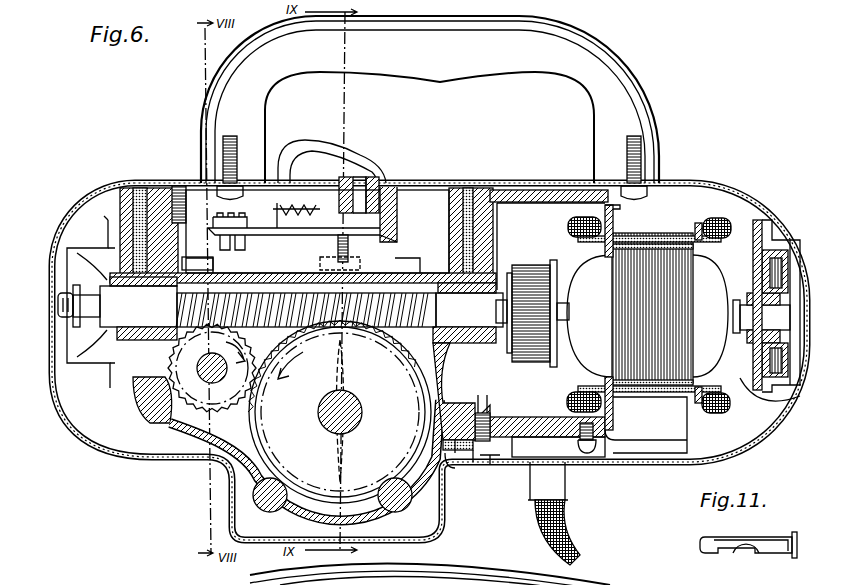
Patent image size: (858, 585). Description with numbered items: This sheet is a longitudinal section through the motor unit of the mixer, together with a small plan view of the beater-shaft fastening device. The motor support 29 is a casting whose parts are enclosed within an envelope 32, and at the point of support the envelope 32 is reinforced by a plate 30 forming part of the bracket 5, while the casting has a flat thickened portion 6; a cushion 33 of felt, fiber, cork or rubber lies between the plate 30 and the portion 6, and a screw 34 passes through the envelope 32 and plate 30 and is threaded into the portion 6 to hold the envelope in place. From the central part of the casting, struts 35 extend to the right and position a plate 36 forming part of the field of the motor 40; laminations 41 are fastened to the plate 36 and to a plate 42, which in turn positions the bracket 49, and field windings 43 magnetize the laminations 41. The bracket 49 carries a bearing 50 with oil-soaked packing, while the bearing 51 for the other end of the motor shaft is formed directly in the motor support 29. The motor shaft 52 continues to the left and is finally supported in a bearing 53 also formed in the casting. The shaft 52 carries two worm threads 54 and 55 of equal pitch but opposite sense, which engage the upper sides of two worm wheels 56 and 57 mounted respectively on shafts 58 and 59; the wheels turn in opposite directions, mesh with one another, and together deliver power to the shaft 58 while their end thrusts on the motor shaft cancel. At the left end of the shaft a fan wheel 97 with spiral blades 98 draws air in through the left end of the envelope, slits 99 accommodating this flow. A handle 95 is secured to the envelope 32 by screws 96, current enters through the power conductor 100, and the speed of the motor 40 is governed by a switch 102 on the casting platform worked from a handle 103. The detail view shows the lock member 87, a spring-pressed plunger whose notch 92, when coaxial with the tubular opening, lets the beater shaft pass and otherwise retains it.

In FIG. 6, the bracket 5 is at (440, 441).
In FIG. 6, the flat thickened portion 6 is at (490, 418).
In FIG. 6, the motor support 29 is at (412, 272).
In FIG. 6, the plate 30 is at (445, 462).
In FIG. 6, the envelope 32 is at (721, 193).
In FIG. 6, the cushion 33 is at (515, 445).
In FIG. 6, the screw 34 is at (488, 466).
In FIG. 6, the struts 35 is at (520, 424).
In FIG. 6, the plate 36 is at (616, 214).
In FIG. 6, the motor 40 is at (722, 288).
In FIG. 6, the laminations 41 is at (660, 236).
In FIG. 6, the plate 42 is at (699, 224).
In FIG. 6, the field windings 43 is at (710, 222).
In FIG. 6, the bracket 49 is at (756, 405).
In FIG. 6, the bearing 50 is at (773, 327).
In FIG. 6, the bearing 51 is at (506, 270).
In FIG. 6, the motor shaft 52 is at (150, 340).
In FIG. 6, the bearing 53 is at (170, 275).
In FIG. 6, the worm thread 54 is at (392, 332).
In FIG. 6, the worm thread 55 is at (284, 273).
In FIG. 6, the worm wheel 56 is at (268, 413).
In FIG. 6, the worm wheel 57 is at (252, 345).
In FIG. 6, the shaft 58 is at (362, 418).
In FIG. 6, the shaft 59 is at (226, 378).
In FIG. 11, the lock member 87 is at (782, 536).
In FIG. 11, the notch 92 is at (746, 553).
In FIG. 6, the handle 95 is at (646, 103).
In FIG. 6, the screws 96 is at (244, 192).
In FIG. 6, the fan wheel 97 is at (105, 224).
In FIG. 6, the blades 98 is at (135, 400).
In FIG. 6, the slits 99 is at (58, 308).
In FIG. 6, the power conductor 100 is at (573, 528).
In FIG. 6, the switch 102 is at (262, 211).
In FIG. 6, the handle 103 is at (345, 147).